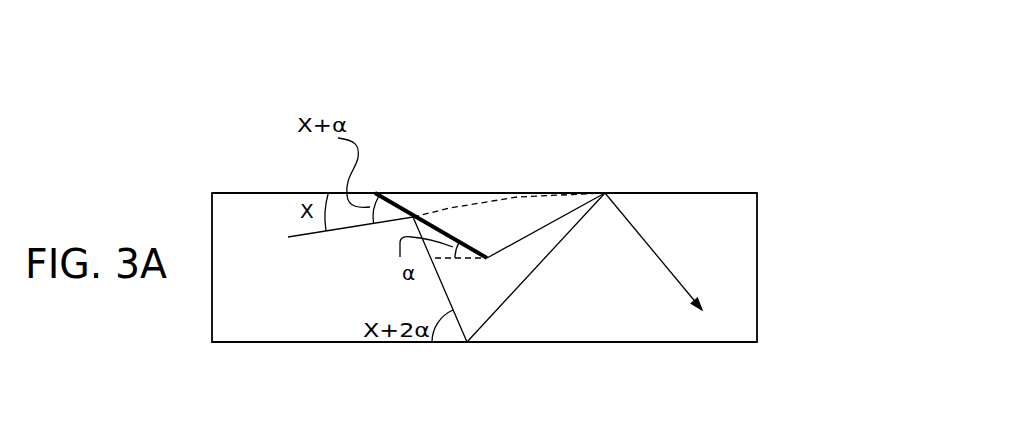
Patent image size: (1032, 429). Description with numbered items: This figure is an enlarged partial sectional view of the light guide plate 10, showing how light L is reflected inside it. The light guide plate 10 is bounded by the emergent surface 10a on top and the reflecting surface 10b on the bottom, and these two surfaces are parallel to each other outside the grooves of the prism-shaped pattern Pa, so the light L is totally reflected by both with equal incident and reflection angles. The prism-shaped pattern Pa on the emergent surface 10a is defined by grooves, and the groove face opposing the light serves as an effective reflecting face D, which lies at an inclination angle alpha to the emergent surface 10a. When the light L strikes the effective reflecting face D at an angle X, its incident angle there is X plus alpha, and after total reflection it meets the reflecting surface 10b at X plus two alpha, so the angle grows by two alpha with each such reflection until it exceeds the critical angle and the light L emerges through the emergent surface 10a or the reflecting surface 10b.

The light guide plate 10 is at (757, 248).
The emergent surface 10a is at (670, 192).
The reflecting surface 10b is at (718, 342).
The effective reflecting face D is at (445, 233).
The prism-shaped pattern Pa is at (492, 166).
The light L is at (653, 259).